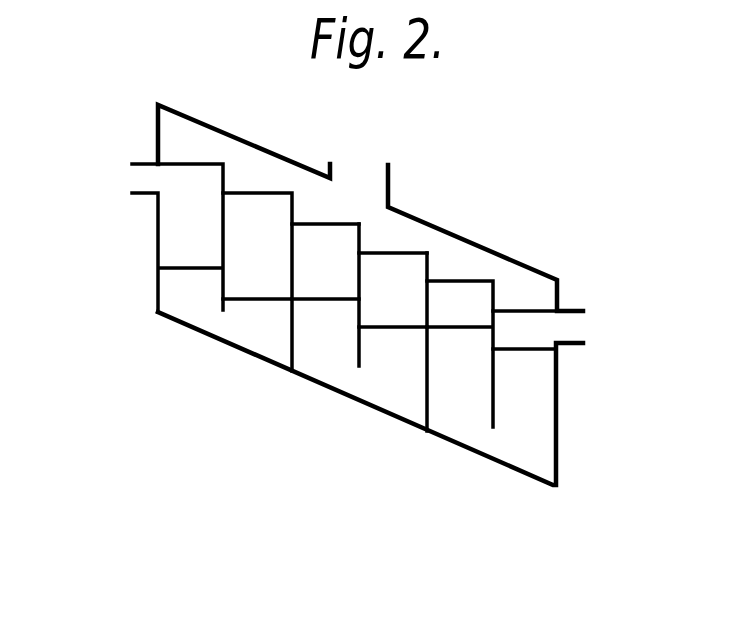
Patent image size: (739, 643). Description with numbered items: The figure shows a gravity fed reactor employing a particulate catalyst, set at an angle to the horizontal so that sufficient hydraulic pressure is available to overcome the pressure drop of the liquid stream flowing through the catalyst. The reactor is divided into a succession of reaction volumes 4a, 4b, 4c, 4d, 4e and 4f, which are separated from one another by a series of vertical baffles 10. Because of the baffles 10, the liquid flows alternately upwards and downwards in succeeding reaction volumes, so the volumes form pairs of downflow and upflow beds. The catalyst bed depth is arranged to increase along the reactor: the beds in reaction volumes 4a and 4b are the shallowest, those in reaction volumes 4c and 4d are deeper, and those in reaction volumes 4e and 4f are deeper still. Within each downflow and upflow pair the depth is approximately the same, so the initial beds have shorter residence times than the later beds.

The reaction volume 4a is at (186, 298).
The reaction volume 4b is at (250, 329).
The reaction volume 4c is at (312, 348).
The reaction volume 4d is at (384, 373).
The reaction volume 4e is at (455, 403).
The reaction volume 4f is at (522, 423).
The vertical baffle 10 is at (351, 360).